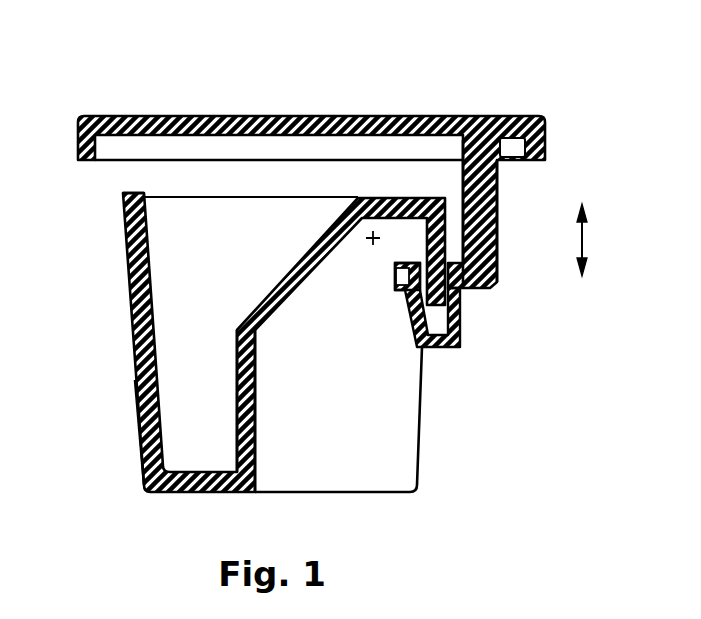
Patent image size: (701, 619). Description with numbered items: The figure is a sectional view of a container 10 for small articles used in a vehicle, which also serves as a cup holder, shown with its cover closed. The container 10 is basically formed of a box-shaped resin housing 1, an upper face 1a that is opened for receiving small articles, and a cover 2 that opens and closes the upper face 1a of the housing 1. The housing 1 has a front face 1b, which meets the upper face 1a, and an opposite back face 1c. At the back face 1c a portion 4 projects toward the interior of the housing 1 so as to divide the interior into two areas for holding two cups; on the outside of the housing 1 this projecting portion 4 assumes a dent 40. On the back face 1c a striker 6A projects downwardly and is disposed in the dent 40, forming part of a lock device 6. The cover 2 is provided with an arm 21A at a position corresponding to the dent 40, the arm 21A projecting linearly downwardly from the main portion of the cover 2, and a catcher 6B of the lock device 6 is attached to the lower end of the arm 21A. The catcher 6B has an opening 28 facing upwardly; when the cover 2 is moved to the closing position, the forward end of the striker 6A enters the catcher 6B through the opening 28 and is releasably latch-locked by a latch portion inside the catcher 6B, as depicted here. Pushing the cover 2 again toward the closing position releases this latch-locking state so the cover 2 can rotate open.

The housing 1 is at (134, 335).
The upper face 1a is at (135, 197).
The front face 1b is at (140, 438).
The back face 1c is at (423, 420).
The cover 2 is at (203, 116).
The projecting portion 4 is at (237, 425).
The lock device 6 is at (565, 272).
The striker 6A is at (495, 282).
The catcher 6B is at (462, 318).
The container 10 is at (452, 94).
The arm 21A is at (498, 185).
The opening 28 is at (422, 260).
The dent 40 is at (363, 470).